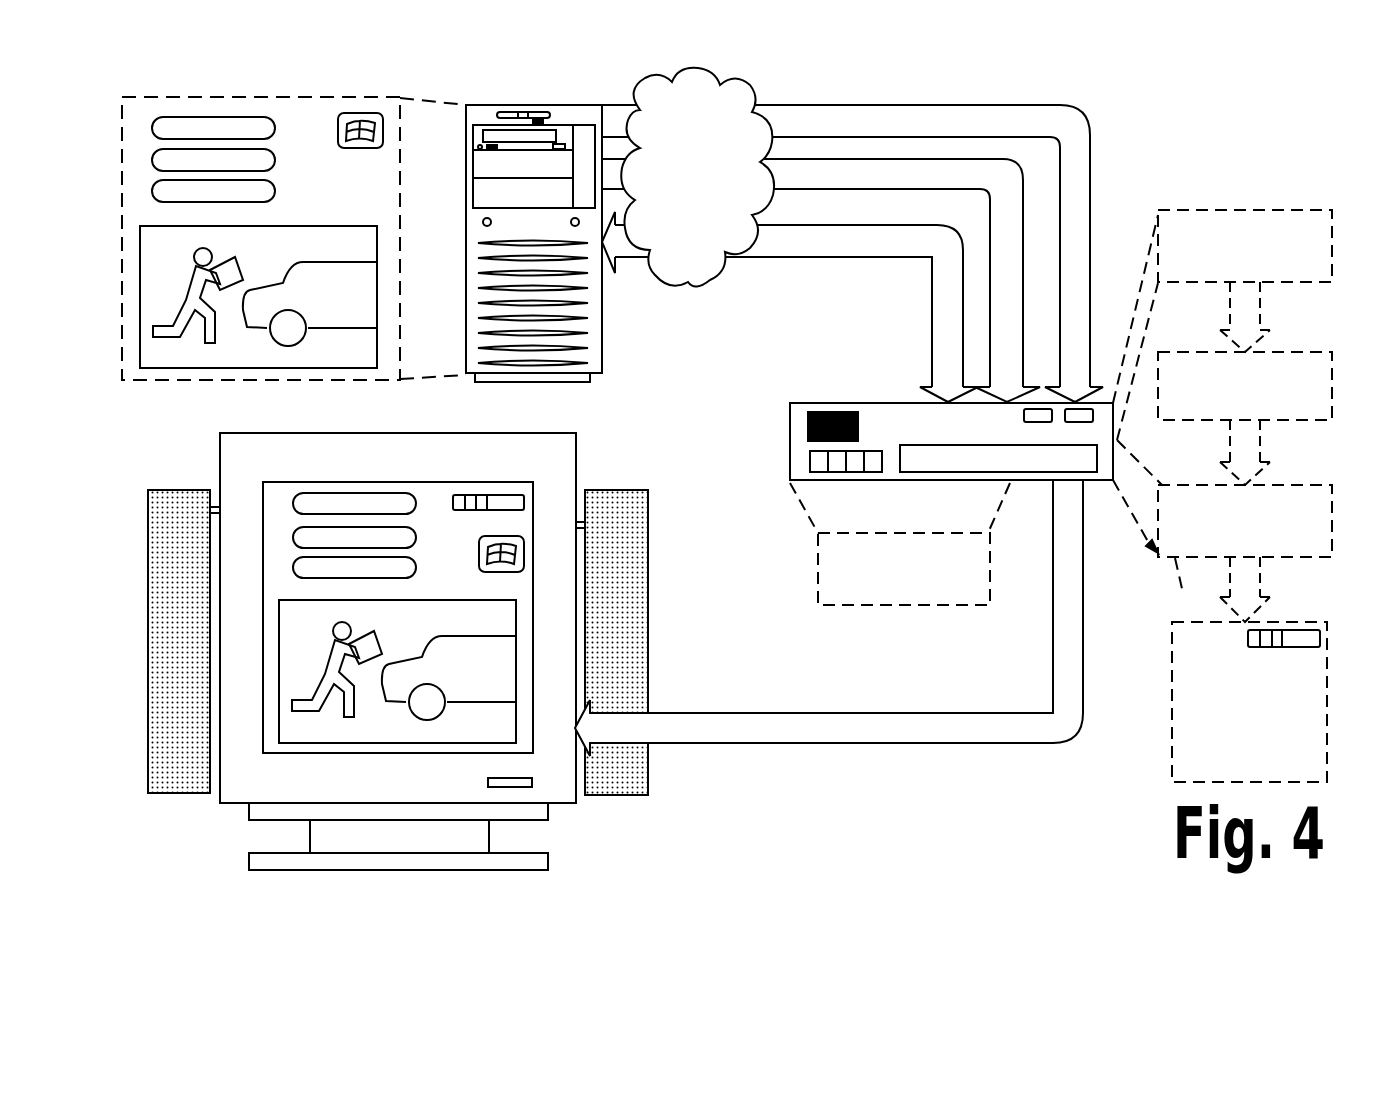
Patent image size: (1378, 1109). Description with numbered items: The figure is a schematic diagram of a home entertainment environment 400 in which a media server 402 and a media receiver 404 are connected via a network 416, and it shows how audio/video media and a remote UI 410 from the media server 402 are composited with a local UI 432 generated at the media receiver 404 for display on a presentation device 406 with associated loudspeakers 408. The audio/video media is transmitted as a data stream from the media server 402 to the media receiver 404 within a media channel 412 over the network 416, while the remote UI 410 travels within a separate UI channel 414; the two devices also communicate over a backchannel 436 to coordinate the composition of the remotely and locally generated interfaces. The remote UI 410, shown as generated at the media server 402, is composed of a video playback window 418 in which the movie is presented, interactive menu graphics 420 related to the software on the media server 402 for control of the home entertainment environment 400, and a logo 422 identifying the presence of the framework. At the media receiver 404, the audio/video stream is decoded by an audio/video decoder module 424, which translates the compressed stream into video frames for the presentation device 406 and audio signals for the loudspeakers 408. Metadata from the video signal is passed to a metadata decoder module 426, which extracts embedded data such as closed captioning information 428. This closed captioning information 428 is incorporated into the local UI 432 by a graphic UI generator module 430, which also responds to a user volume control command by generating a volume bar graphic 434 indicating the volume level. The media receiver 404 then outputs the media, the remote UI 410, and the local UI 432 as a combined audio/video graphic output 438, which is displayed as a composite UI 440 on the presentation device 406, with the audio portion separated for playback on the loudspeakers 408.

The home entertainment environment 400 is at (806, 800).
The media server 402 is at (602, 355).
The media receiver 404 is at (790, 456).
The presentation device 406 is at (562, 803).
The loudspeakers 408 is at (176, 791).
The remote UI 410 is at (176, 382).
The media channel 412 is at (1093, 137).
The UI channel 414 is at (990, 236).
The network 416 is at (697, 290).
The video playback window 418 is at (312, 368).
The interactive menu graphics 420 is at (185, 117).
The logo 422 is at (355, 113).
The audio/video decoder module 424 is at (953, 608).
The metadata decoder module 426 is at (1282, 210).
The closed captioning information 428 is at (400, 746).
The graphic UI generator module 430 is at (1183, 600).
The local UI 432 is at (1170, 760).
The volume bar graphic 434 is at (505, 495).
The backchannel 436 is at (930, 309).
The combined audio/video graphic output 438 is at (878, 745).
The composite UI 440 is at (348, 482).